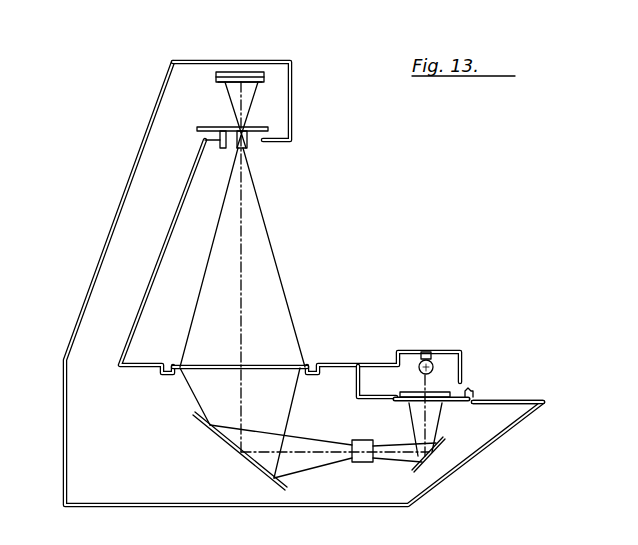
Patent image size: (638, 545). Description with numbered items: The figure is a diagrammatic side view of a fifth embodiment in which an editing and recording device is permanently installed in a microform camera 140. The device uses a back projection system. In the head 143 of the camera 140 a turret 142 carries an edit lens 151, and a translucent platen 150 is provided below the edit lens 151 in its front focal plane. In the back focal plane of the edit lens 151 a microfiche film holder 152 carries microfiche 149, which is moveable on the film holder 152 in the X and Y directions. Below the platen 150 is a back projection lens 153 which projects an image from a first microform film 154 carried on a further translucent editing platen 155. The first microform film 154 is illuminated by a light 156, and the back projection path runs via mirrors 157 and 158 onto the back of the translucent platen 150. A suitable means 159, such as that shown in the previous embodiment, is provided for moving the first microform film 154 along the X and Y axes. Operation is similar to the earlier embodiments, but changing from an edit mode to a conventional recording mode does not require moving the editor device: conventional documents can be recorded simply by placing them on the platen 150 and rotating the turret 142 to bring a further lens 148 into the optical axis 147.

The microform camera 140 is at (107, 247).
The turret 142 is at (268, 130).
The head 143 is at (292, 85).
The optical axis 147 is at (243, 250).
The further lens 148 is at (218, 148).
The microfiche 149 is at (216, 84).
The translucent platen 150 is at (310, 366).
The edit lens 151 is at (247, 146).
The film holder 152 is at (256, 73).
The back projection lens 153 is at (363, 462).
The first microform film 154 is at (440, 391).
The translucent editing platen 155 is at (458, 404).
The light 156 is at (432, 362).
The mirror 157 is at (432, 462).
The mirror 158 is at (243, 462).
The means for moving the first microform film 159 is at (490, 399).